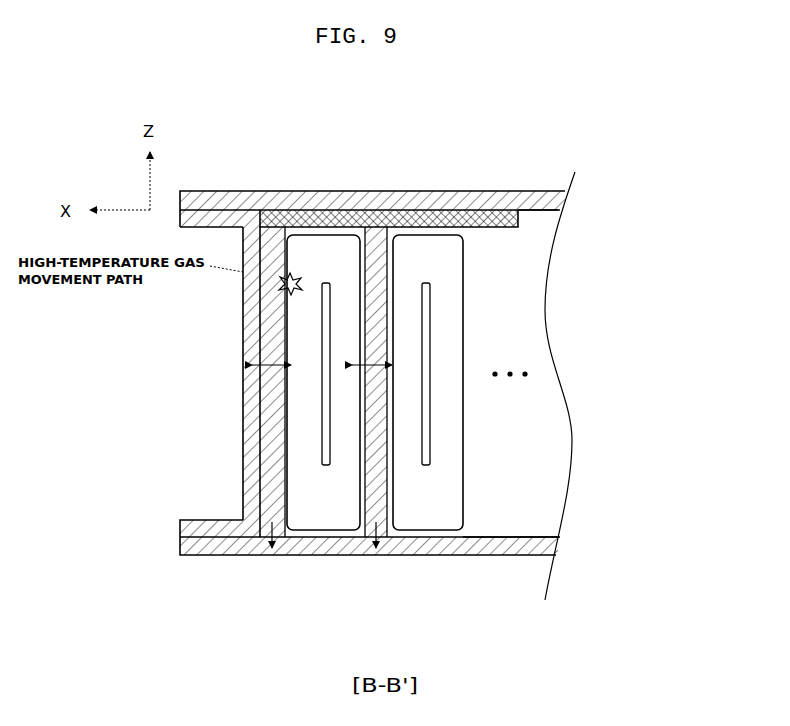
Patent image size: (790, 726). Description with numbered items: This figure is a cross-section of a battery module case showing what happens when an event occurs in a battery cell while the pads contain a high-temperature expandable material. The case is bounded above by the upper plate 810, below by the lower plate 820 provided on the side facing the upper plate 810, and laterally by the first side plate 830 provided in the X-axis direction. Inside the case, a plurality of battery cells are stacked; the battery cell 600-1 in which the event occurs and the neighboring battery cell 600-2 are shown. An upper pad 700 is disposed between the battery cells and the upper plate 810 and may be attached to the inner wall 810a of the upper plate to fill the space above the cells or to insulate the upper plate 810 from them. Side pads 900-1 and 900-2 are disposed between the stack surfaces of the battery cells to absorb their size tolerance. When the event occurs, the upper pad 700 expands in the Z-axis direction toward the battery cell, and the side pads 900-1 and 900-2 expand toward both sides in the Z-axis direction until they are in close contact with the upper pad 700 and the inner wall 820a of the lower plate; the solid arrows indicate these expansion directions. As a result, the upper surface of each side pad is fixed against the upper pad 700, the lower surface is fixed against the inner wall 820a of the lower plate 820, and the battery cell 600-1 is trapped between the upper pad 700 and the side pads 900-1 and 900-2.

The upper plate 810 is at (496, 191).
The inner wall of the upper plate 810a is at (540, 212).
The upper pad 700 is at (497, 228).
The first side plate 830 is at (243, 383).
The lower plate 820 is at (497, 556).
The inner wall of the lower plate 820a is at (508, 537).
The side pad 900-1 is at (277, 230).
The side pad 900-2 is at (378, 230).
The battery cell 600-1 is at (320, 533).
The battery cell 600-2 is at (422, 533).